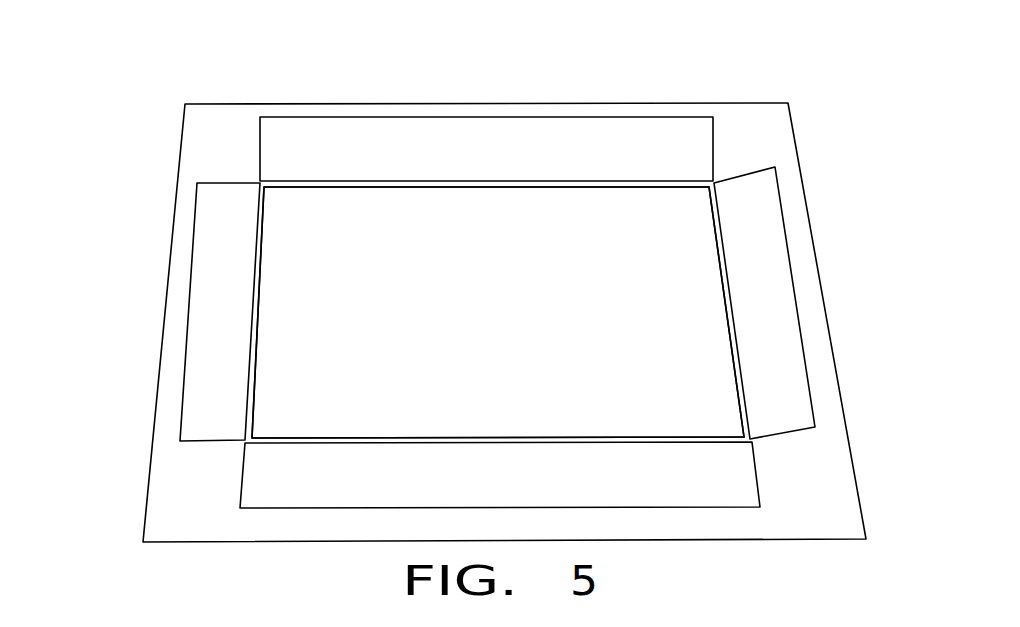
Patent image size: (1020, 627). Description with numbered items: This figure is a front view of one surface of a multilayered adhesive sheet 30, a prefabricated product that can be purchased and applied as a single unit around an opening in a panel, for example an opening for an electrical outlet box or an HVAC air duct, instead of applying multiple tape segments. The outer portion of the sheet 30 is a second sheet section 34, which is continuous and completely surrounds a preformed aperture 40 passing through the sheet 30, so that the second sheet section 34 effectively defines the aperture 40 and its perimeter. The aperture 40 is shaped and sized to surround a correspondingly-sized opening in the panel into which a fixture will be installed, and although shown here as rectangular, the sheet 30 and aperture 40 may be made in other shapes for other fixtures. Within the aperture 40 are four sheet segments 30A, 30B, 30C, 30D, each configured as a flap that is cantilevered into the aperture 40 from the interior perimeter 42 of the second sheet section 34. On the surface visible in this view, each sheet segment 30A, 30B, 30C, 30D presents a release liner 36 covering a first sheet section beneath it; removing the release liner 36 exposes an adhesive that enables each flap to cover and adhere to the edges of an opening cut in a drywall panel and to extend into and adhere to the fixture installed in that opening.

The multilayered adhesive sheet 30 is at (117, 112).
The sheet segment 30A is at (394, 124).
The sheet segment 30B is at (301, 463).
The sheet segment 30C is at (192, 312).
The sheet segment 30D is at (790, 303).
The second sheet section 34 is at (768, 129).
The release liner 36 is at (357, 162).
The preformed aperture 40 is at (548, 210).
The interior perimeter 42 is at (713, 232).